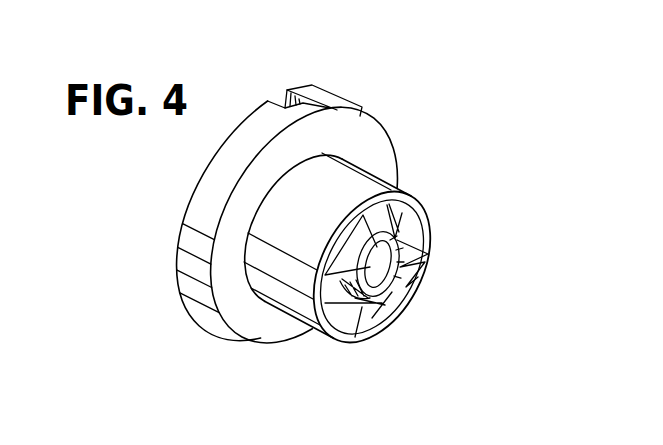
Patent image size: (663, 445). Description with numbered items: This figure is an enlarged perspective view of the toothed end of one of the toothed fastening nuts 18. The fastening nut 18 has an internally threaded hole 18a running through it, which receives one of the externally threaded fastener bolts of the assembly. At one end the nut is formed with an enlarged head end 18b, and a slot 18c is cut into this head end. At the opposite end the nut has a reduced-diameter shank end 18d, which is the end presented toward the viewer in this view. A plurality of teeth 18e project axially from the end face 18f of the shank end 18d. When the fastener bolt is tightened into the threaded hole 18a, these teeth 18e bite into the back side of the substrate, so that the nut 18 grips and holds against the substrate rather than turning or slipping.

The fastening nut 18 is at (392, 88).
The internally threaded hole 18a is at (338, 328).
The enlarged head end 18b is at (192, 302).
The slot 18c is at (285, 90).
The reduced-diameter shank end 18d is at (368, 183).
The teeth 18e is at (400, 250).
The end face 18f is at (345, 282).